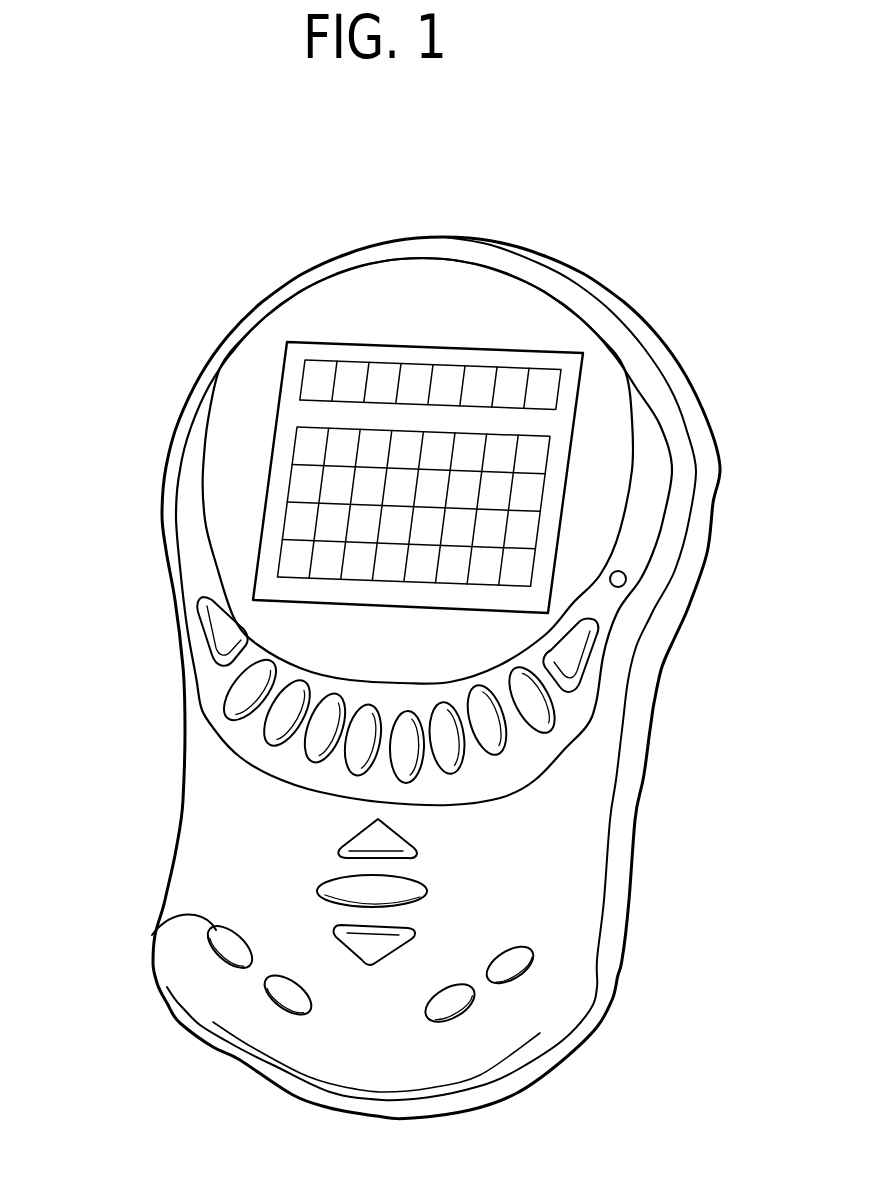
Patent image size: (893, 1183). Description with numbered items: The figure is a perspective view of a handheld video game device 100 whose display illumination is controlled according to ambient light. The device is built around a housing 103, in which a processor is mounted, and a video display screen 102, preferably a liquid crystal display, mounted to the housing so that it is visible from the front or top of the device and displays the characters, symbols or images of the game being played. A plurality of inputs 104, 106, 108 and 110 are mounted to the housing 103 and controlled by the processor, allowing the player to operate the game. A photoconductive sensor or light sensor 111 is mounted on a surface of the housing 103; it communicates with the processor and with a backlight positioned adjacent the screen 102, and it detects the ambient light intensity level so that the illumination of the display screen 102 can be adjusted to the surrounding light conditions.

The handheld video game device 100 is at (626, 283).
The video display screen 102 is at (268, 458).
The housing 103 is at (647, 637).
The input 104 is at (210, 620).
The input 106 is at (322, 737).
The input 108 is at (397, 838).
The input 110 is at (180, 917).
The photoconductive sensor 111 is at (626, 577).